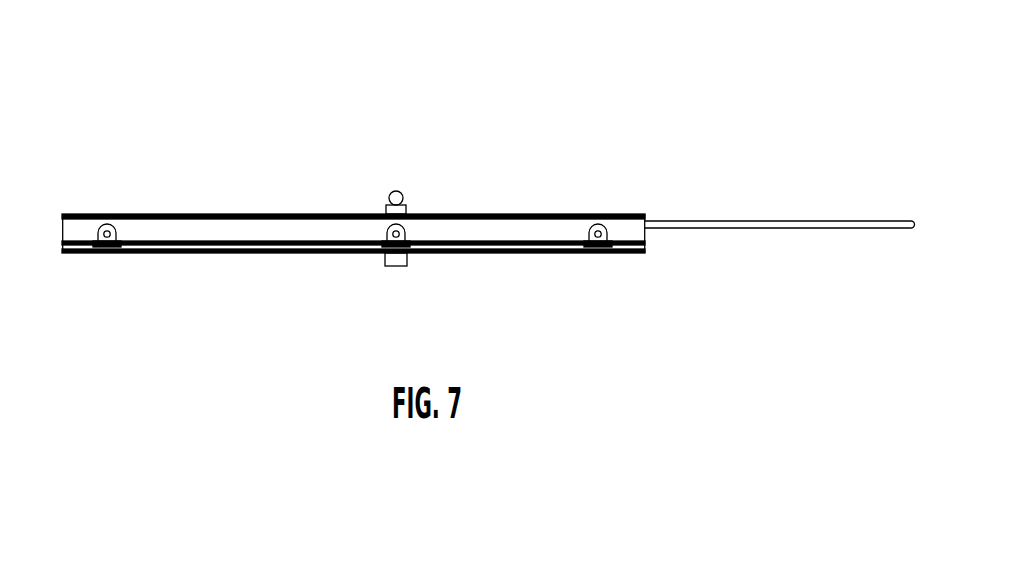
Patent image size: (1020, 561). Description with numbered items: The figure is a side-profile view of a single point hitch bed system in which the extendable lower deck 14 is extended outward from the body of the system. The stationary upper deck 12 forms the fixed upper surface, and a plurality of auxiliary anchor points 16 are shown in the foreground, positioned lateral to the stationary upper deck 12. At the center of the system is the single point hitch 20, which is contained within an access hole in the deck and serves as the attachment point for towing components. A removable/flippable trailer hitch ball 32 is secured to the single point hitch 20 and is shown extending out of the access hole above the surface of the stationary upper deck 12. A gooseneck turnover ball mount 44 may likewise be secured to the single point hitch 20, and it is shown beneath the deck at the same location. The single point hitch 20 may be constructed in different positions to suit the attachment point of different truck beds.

The stationary upper deck 12 is at (225, 208).
The extendable lower deck 14 is at (871, 217).
The auxiliary anchor points 16 is at (100, 248).
The single point hitch 20 is at (384, 204).
The trailer hitch ball 32 is at (399, 190).
The gooseneck turnover ball mount 44 is at (402, 268).